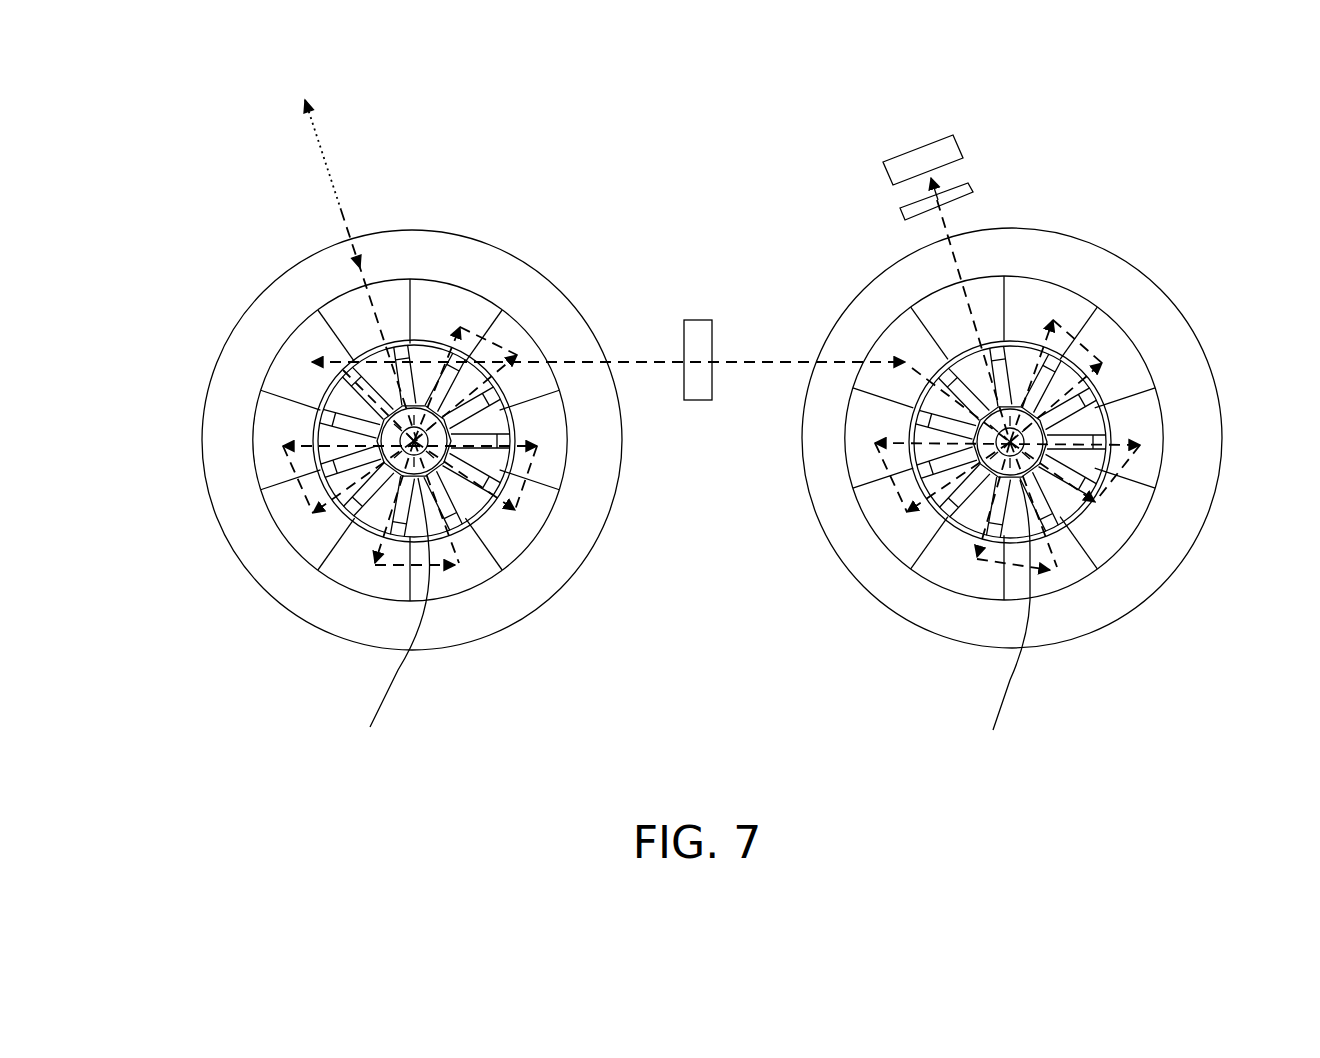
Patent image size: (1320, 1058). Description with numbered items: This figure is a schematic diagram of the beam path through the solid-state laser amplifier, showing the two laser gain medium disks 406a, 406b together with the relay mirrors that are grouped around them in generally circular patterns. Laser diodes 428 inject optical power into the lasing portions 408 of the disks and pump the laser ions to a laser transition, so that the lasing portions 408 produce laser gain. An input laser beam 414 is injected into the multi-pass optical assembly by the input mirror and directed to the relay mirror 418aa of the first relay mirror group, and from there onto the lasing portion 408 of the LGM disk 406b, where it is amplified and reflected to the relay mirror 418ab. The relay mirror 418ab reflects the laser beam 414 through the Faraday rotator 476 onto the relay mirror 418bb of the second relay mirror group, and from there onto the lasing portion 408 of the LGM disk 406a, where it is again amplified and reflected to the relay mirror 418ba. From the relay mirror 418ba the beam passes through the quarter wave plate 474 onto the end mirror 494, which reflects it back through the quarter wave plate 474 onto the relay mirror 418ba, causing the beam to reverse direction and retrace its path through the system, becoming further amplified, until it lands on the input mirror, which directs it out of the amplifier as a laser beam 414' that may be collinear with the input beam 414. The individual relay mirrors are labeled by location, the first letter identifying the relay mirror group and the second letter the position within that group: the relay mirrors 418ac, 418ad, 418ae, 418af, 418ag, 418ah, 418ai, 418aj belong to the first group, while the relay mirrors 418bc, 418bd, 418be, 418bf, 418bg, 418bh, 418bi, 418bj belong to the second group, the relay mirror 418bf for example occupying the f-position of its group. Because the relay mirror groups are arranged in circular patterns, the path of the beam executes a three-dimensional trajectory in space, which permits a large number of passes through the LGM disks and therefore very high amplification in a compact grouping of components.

The LGM disk 406a is at (995, 621).
The LGM disk 406b is at (382, 620).
The lasing portion 408 is at (715, 458).
The input laser beam 414 is at (321, 317).
The laser beam 414' is at (355, 145).
The relay mirror 418aa is at (291, 296).
The relay mirror 418ab is at (482, 621).
The relay mirror 418ac is at (922, 623).
The relay mirror 418ad is at (1115, 282).
The relay mirror 418ae is at (540, 298).
The relay mirror 418af is at (255, 568).
The relay mirror 418ag is at (796, 442).
The relay mirror 418ah is at (1206, 462).
The relay mirror 418ai is at (581, 565).
The relay mirror 418aj is at (215, 346).
The relay mirror 418ba is at (1026, 271).
The relay mirror 418bb is at (1085, 620).
The relay mirror 418bc is at (332, 630).
The relay mirror 418bd is at (456, 243).
The relay mirror 418be is at (1171, 323).
The relay mirror 418bf is at (853, 568).
The relay mirror 418bg is at (200, 431).
The relay mirror 418bh is at (603, 481).
The relay mirror 418bi is at (1186, 558).
The relay mirror 418bj is at (848, 315).
The laser diode 428 is at (696, 431).
The quarter wave plate 474 is at (977, 187).
The Faraday rotator 476 is at (698, 320).
The end mirror 494 is at (883, 170).